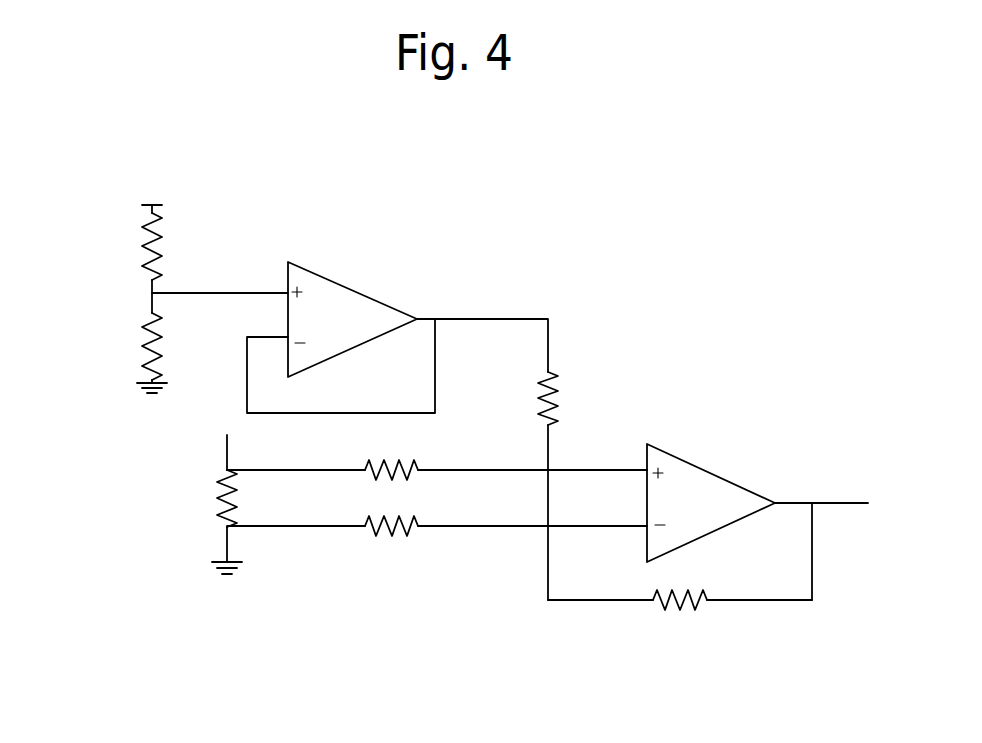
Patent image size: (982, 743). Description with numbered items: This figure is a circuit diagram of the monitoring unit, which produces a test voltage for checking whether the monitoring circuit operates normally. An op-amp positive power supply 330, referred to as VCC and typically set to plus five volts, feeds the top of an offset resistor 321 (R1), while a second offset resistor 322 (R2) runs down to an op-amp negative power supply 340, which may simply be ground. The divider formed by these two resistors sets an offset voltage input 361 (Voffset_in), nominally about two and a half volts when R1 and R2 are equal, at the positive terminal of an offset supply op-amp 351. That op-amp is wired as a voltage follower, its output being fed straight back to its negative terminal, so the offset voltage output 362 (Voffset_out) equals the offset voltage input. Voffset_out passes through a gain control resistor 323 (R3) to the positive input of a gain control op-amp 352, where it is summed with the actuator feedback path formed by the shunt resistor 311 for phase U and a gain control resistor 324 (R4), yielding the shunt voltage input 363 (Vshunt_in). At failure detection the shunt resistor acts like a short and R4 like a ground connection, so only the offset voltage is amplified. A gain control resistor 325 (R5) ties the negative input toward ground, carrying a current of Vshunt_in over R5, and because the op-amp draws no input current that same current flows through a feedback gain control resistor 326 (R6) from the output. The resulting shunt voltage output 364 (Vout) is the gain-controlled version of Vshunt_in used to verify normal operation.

The op-amp positive power supply 330 is at (155, 180).
The offset resistor 321 is at (163, 245).
The offset resistor 322 is at (152, 316).
The op-amp negative power supply 340 is at (138, 380).
The offset voltage input 361 is at (228, 263).
The offset supply op-amp 351 is at (357, 290).
The offset voltage output 362 is at (492, 282).
The gain control resistor 323 is at (558, 372).
The shunt resistor 311 is at (218, 520).
The gain control resistor 324 is at (403, 462).
The gain control resistor 325 is at (412, 533).
The shunt voltage input 363 is at (590, 473).
The gain control op-amp 352 is at (712, 472).
The shunt voltage output 364 is at (832, 468).
The gain control resistor 326 is at (700, 610).